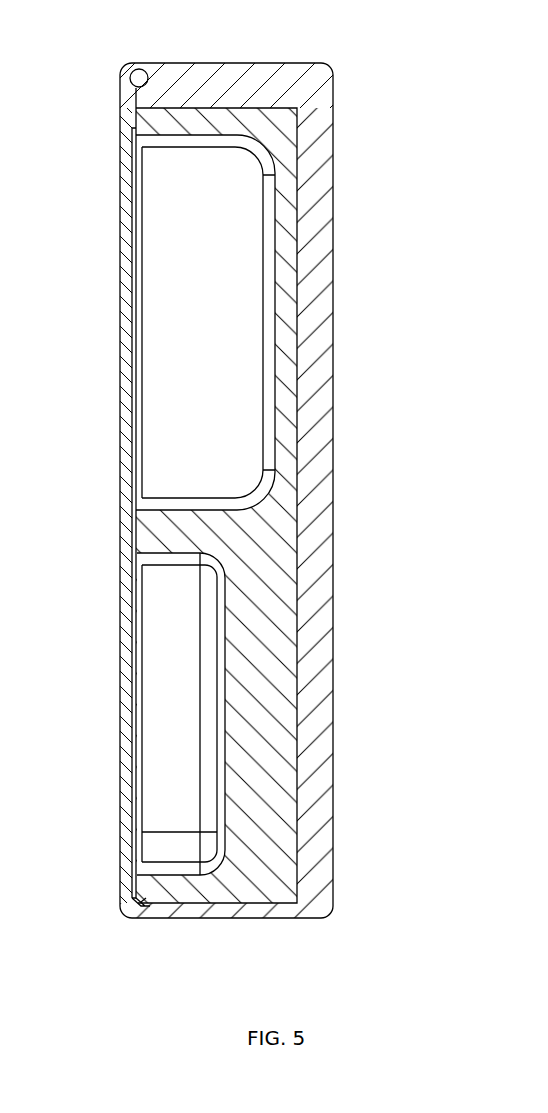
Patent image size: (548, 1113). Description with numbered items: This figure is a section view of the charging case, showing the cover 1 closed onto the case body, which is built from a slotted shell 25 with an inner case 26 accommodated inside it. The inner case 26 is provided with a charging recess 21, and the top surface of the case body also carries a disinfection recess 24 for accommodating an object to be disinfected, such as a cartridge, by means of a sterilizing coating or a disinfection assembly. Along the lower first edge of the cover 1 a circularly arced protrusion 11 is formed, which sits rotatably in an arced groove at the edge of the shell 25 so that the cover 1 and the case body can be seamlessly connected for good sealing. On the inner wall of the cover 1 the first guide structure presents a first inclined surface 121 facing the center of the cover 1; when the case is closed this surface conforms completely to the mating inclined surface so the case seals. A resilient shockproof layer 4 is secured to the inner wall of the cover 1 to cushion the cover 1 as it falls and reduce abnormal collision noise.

The cover 1 is at (247, 475).
The arced protrusion 11 is at (140, 75).
The first inclined surface 121 is at (131, 900).
The shockproof layer 4 is at (83, 475).
The charging recess 21 is at (225, 345).
The disinfection recess 24 is at (180, 742).
The shell 25 is at (314, 246).
The inner case 26 is at (268, 563).